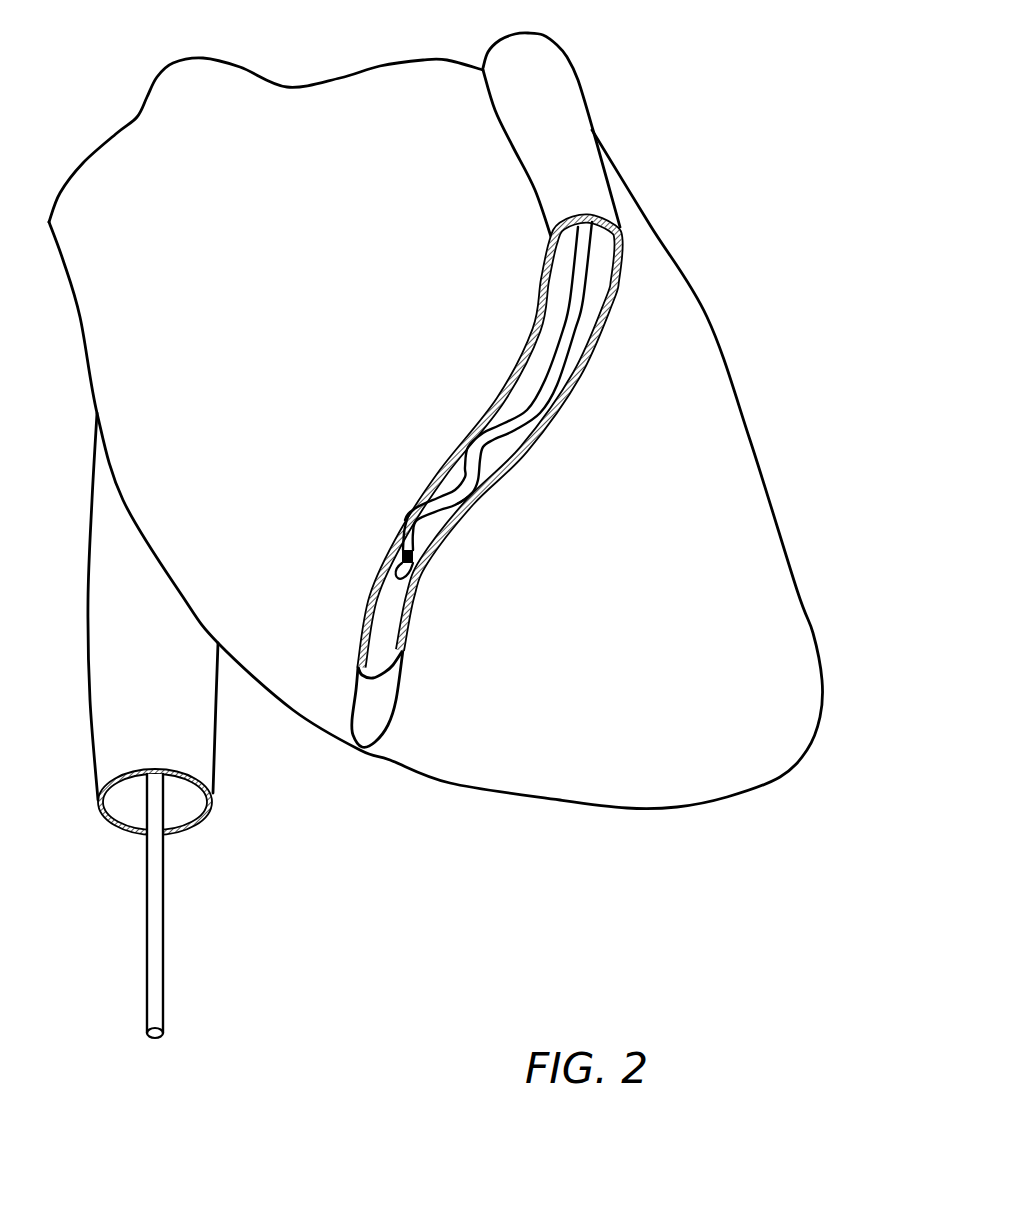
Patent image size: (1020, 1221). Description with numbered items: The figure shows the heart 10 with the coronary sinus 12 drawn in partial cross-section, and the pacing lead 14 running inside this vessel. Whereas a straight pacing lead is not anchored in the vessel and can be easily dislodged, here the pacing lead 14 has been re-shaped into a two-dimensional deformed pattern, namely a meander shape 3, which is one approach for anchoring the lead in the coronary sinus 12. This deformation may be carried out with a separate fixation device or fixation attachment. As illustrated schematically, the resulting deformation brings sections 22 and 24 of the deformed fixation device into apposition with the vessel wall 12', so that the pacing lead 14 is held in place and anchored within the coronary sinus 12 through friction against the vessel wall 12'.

The heart 10 is at (630, 840).
The coronary sinus 12 is at (613, 138).
The vessel wall 12' is at (499, 442).
The pacing lead 14 is at (573, 325).
The section of the deformed fixation device 22 is at (477, 497).
The section of the deformed fixation device 24 is at (405, 508).
The meander shape 3 is at (438, 395).